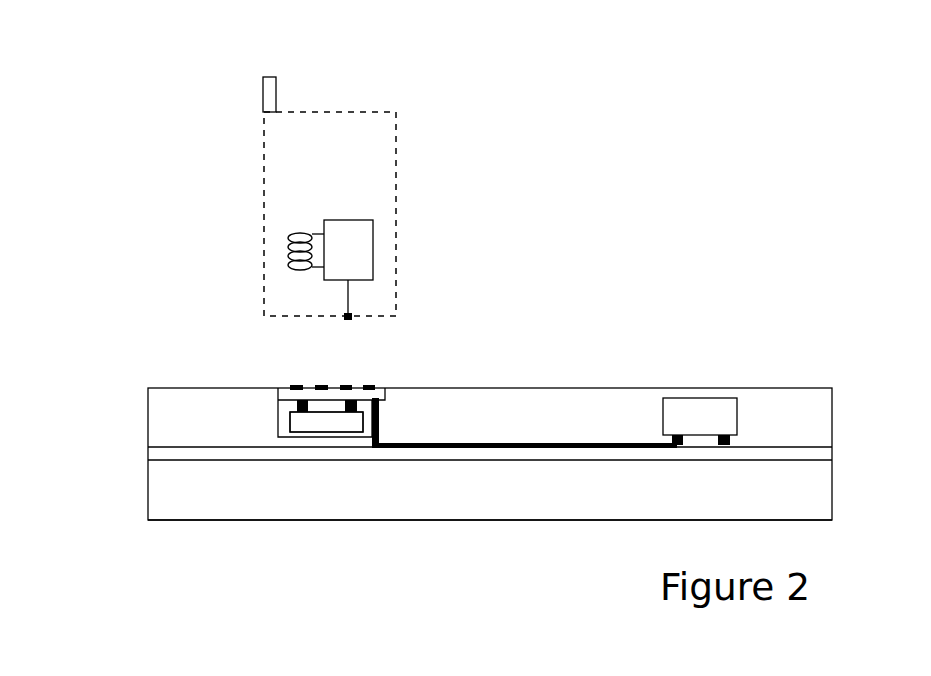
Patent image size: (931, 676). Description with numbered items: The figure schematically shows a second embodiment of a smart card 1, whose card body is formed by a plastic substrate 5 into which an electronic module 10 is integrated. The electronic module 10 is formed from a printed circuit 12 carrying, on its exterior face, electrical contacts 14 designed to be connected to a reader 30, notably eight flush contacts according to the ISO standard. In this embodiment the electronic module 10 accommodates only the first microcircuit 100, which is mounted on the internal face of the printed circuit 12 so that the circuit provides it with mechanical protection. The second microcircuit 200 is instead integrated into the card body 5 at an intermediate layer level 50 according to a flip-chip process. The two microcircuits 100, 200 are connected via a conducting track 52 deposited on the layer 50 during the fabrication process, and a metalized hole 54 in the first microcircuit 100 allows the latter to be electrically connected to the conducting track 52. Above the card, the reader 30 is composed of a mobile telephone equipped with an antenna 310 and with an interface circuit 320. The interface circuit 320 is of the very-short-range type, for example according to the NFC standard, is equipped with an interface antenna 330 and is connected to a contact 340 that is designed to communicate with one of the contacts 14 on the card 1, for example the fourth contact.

The smart card 1 is at (126, 360).
The plastic substrate 5 is at (176, 507).
The electronic module 10 is at (277, 371).
The printed circuit 12 is at (333, 397).
The electrical contacts 14 is at (375, 378).
The reader 30 is at (414, 118).
The intermediate layer 50 is at (170, 455).
The conducting track 52 is at (459, 452).
The metalized hole 54 is at (382, 418).
The first microcircuit 100 is at (305, 422).
The second microcircuit 200 is at (684, 410).
The antenna 310 is at (261, 94).
The interface circuit 320 is at (377, 250).
The interface antenna 330 is at (285, 250).
The contact 340 is at (349, 322).